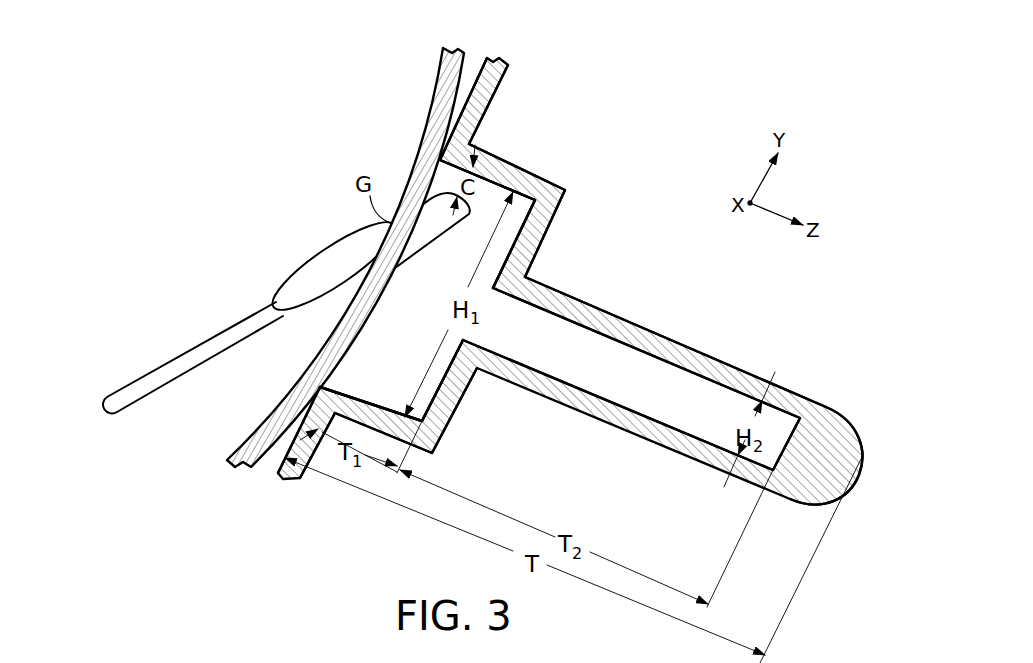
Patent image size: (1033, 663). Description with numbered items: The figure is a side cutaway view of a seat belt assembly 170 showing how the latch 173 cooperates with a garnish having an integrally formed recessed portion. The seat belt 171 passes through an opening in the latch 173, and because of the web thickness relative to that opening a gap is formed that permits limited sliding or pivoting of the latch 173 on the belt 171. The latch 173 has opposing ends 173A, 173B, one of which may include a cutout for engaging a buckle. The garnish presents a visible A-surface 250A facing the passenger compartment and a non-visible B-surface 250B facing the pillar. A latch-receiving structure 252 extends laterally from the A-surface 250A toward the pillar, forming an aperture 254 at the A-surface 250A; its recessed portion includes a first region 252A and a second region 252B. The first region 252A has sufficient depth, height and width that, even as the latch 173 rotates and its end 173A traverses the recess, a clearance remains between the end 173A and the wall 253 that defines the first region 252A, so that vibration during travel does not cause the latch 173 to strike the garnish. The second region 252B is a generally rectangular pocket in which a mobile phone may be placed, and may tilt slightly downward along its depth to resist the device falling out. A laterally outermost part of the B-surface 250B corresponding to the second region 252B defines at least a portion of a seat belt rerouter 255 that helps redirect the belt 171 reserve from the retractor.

The seat belt assembly 170 is at (502, 252).
The seat belt 171 is at (430, 113).
The latch 173 is at (286, 303).
The end of latch 173A is at (330, 258).
The end of latch 173B is at (180, 353).
The A-surface 250A is at (483, 65).
The B-surface 250B is at (569, 315).
The latch-receiving structure 252 is at (591, 252).
The first region 252A is at (430, 341).
The second region 252B is at (660, 391).
The wall 253 is at (506, 183).
The aperture 254 is at (413, 396).
The seat belt rerouter 255 is at (843, 412).